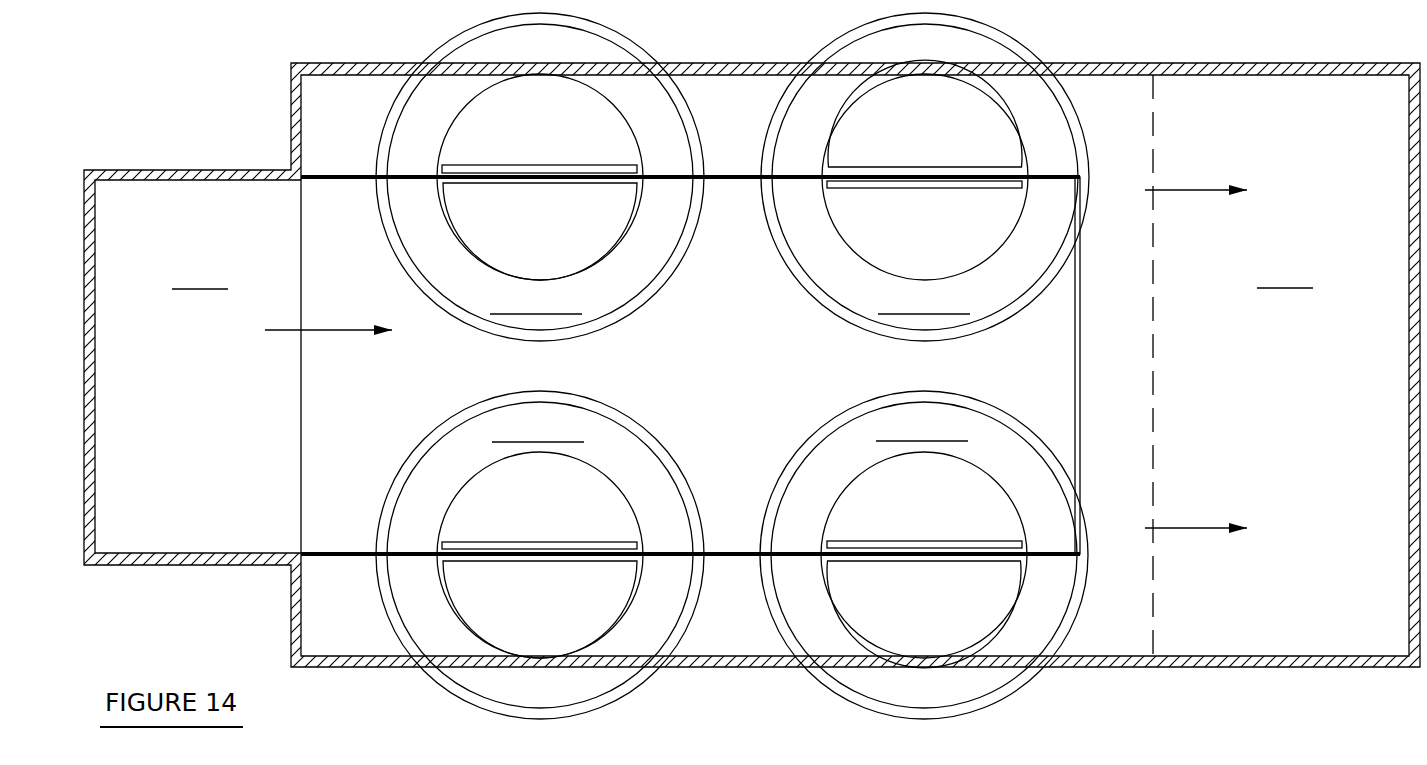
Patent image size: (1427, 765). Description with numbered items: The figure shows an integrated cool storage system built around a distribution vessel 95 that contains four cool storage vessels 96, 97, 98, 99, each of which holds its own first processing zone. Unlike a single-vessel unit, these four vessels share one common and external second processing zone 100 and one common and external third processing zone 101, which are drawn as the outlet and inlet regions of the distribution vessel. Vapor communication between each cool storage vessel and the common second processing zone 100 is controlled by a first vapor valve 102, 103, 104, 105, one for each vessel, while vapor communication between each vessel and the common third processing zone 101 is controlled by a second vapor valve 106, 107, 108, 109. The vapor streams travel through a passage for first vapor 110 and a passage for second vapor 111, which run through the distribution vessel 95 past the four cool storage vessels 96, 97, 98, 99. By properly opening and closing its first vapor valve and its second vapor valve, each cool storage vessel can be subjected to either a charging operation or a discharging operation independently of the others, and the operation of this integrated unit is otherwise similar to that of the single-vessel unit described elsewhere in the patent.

The distribution vessel 95 is at (283, 90).
The cool storage vessel 96 is at (609, 468).
The cool storage vessel 97 is at (991, 467).
The cool storage vessel 98 is at (606, 292).
The cool storage vessel 99 is at (994, 288).
The common second processing zone 100 is at (1256, 437).
The common third processing zone 101 is at (220, 440).
The first vapor valve 102 is at (510, 619).
The first vapor valve 103 is at (902, 619).
The first vapor valve 104 is at (539, 146).
The first vapor valve 105 is at (925, 113).
The second vapor valve 106 is at (539, 524).
The second vapor valve 107 is at (924, 523).
The second vapor valve 108 is at (517, 240).
The second vapor valve 109 is at (902, 239).
The passage for first vapor 110 is at (705, 134).
The passage for second vapor 111 is at (705, 371).